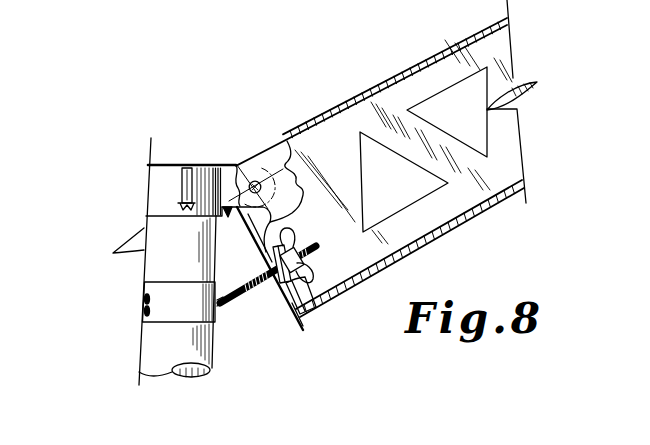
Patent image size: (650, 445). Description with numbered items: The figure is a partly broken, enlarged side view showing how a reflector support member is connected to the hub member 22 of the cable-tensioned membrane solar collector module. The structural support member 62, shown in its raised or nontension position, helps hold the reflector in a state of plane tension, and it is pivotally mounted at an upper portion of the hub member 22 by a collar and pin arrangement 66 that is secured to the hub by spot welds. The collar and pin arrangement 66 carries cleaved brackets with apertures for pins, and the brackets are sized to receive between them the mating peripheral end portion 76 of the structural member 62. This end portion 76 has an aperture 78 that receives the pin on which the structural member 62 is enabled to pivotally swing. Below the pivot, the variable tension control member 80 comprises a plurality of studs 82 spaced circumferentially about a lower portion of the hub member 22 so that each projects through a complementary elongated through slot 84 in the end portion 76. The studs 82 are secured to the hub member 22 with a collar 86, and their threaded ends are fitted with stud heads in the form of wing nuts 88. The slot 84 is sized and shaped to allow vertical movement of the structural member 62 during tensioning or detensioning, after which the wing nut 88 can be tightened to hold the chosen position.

The hub member 22 is at (155, 340).
The structural support member 62 is at (449, 220).
The collar and pin arrangement 66 is at (205, 156).
The peripheral end portion 76 is at (300, 322).
The aperture 78 is at (255, 181).
The variable tension control member 80 is at (244, 305).
The stud 82 is at (228, 303).
The elongated through slot 84 is at (316, 306).
The collar 86 is at (190, 312).
The wing nut 88 is at (316, 268).